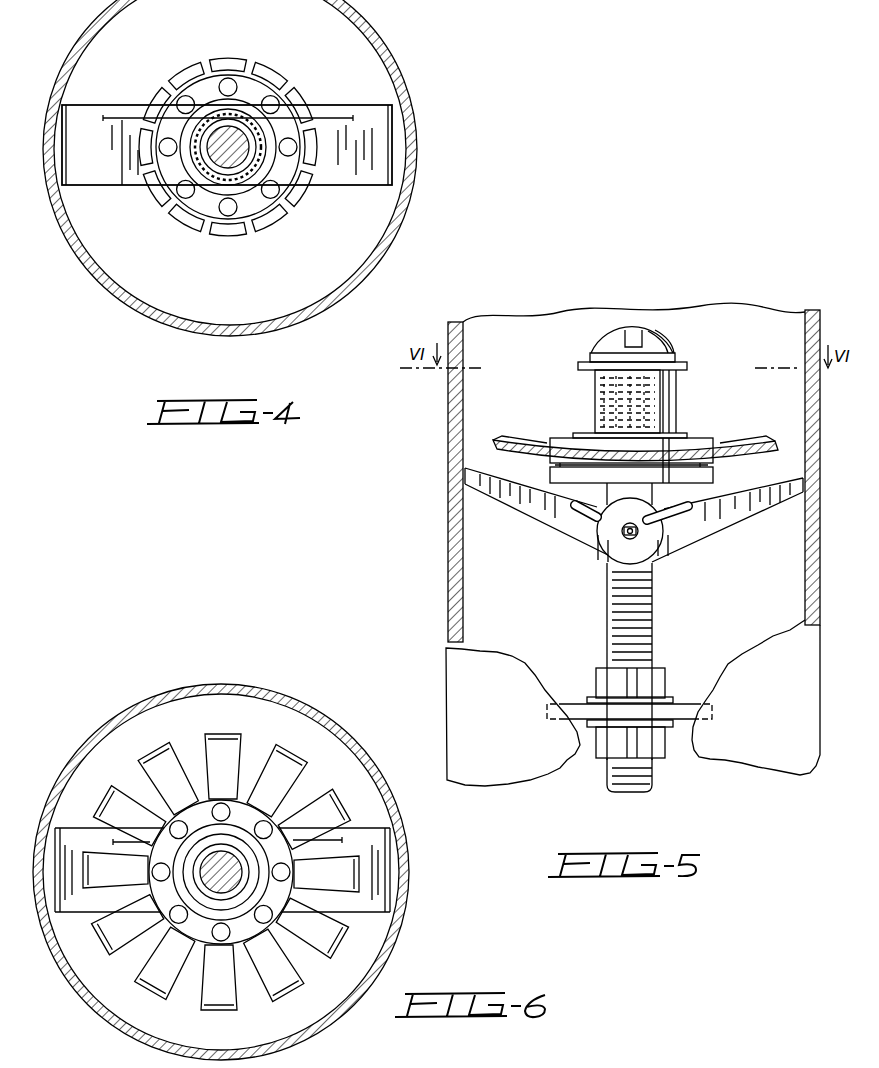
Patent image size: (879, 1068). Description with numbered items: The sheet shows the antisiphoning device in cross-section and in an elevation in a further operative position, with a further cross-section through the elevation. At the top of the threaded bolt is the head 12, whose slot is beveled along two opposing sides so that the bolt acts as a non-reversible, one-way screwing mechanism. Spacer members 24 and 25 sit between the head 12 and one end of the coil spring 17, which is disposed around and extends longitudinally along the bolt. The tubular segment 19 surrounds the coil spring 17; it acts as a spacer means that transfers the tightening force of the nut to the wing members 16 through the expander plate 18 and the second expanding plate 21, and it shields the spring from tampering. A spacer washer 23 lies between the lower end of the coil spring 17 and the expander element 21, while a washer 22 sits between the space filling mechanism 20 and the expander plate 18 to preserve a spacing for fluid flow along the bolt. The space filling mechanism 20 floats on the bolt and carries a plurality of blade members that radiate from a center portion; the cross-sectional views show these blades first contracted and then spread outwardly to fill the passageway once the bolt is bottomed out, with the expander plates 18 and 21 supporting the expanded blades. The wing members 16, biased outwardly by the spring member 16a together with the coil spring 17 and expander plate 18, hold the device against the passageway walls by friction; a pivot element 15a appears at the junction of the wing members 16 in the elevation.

In FIG. 4, the head 12 is at (250, 153).
In FIG. 5, the head 12 is at (650, 342).
In FIG. 6, the head 12 is at (225, 893).
In FIG. 5, the pivot pin 15a is at (630, 532).
In FIG. 4, the wing members 16 is at (374, 182).
In FIG. 5, the wing members 16 is at (717, 522).
In FIG. 6, the wing members 16 is at (376, 874).
In FIG. 4, the spring member 16a is at (320, 117).
In FIG. 6, the spring member 16a is at (345, 841).
In FIG. 5, the coil spring 17 is at (660, 416).
In FIG. 5, the expander plate 18 is at (712, 479).
In FIG. 4, the tubular segment 19 is at (243, 208).
In FIG. 5, the tubular segment 19 is at (681, 391).
In FIG. 6, the tubular segment 19 is at (247, 900).
In FIG. 4, the space filling mechanism 20 is at (291, 82).
In FIG. 6, the space filling mechanism 20 is at (364, 888).
In FIG. 4, the second expanding plate 21 is at (197, 202).
In FIG. 5, the second expanding plate 21 is at (714, 442).
In FIG. 6, the second expanding plate 21 is at (170, 926).
In FIG. 5, the washer 22 is at (683, 470).
In FIG. 4, the spacer washer 23 is at (222, 180).
In FIG. 5, the spacer washer 23 is at (582, 432).
In FIG. 6, the spacer washer 23 is at (207, 910).
In FIG. 5, the spacer member 24 is at (687, 367).
In FIG. 5, the spacer member 25 is at (678, 357).